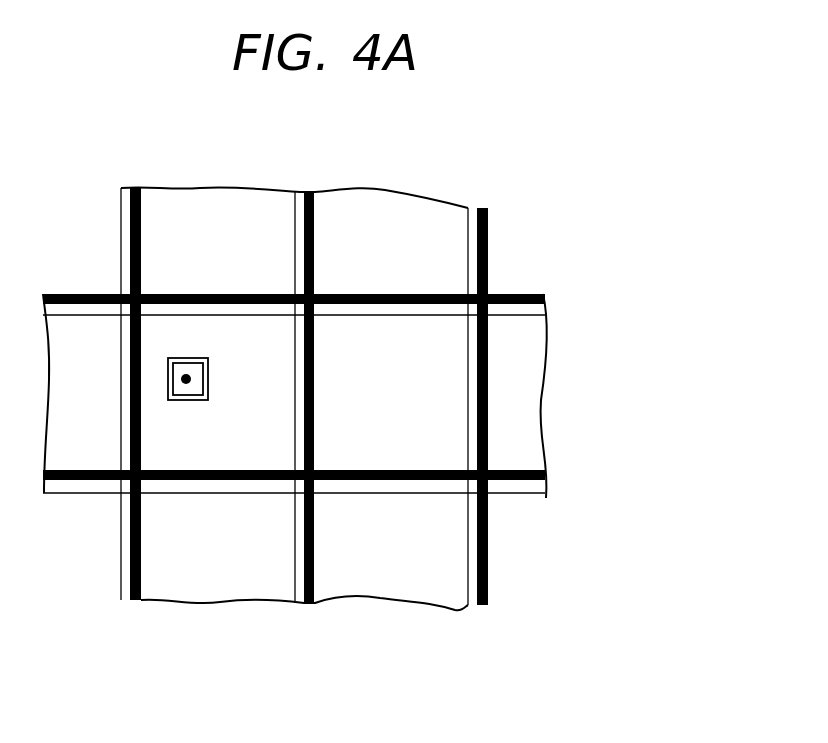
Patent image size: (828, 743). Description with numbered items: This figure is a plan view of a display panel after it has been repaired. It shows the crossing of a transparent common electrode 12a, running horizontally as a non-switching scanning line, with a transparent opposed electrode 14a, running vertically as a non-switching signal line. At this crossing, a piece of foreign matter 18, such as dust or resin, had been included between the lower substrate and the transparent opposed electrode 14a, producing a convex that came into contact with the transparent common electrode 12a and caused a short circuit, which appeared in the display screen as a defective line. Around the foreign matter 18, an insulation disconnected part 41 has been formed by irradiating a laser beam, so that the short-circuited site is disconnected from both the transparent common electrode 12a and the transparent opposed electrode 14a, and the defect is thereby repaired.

The transparent opposed electrode 14a is at (213, 197).
The transparent common electrode 12a is at (530, 425).
The foreign matter 18 is at (190, 376).
The insulation disconnected part 41 is at (198, 400).